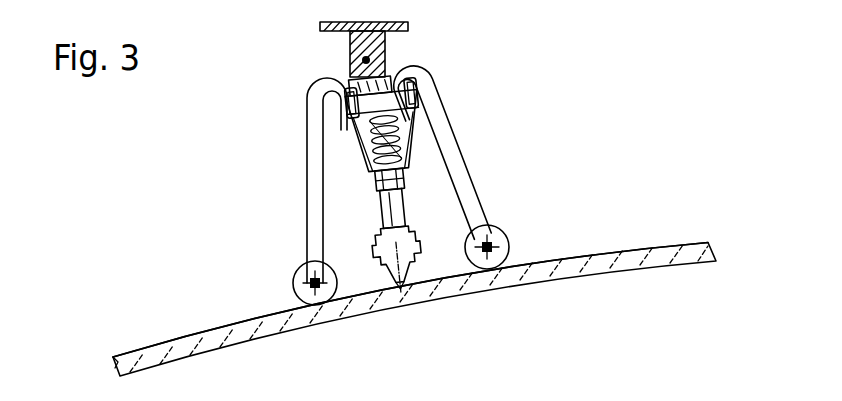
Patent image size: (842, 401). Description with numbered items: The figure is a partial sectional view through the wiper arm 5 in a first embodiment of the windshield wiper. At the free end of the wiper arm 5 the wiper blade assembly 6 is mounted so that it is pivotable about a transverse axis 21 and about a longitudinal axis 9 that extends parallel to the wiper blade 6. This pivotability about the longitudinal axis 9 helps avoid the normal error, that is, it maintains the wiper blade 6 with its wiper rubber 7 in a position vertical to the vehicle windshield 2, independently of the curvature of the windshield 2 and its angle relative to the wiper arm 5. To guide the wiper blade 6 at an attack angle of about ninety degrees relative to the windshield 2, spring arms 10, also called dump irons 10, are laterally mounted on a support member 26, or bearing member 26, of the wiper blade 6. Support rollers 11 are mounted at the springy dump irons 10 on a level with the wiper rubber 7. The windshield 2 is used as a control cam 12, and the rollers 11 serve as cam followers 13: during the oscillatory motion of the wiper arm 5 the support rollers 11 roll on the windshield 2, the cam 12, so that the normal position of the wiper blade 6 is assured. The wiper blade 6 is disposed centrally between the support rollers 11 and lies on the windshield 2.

The windshield 2 is at (653, 254).
The wiper arm 5 is at (410, 28).
The wiper blade assembly 6 is at (425, 112).
The wiper rubber 7 is at (412, 267).
The longitudinal axis 9 is at (352, 62).
The spring arms 10 is at (310, 149).
The support rollers 11 is at (306, 273).
The cam 12 is at (597, 232).
The cam followers 13 is at (489, 170).
The transverse axis 21 is at (340, 113).
The support member 26 is at (397, 86).